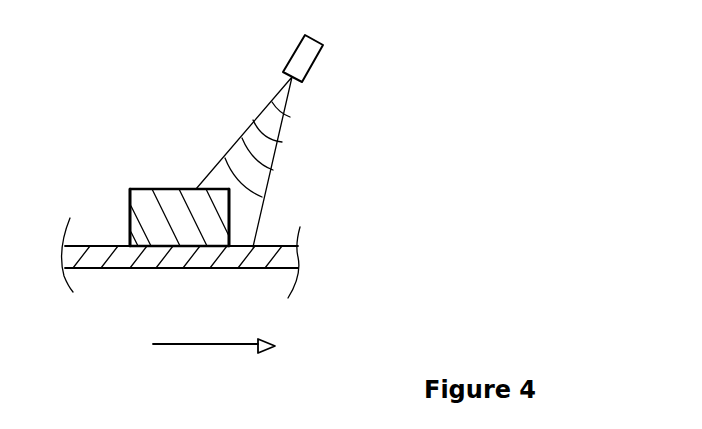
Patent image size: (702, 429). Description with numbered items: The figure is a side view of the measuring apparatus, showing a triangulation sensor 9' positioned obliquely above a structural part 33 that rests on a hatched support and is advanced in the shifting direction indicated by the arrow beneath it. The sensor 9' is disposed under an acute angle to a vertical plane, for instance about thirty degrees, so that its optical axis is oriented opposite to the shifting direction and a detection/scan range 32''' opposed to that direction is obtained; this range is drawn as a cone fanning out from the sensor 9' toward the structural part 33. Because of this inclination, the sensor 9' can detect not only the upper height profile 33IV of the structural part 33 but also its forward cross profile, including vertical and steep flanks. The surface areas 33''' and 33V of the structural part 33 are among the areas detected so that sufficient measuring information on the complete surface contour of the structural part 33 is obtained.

The triangulation sensor 9' is at (329, 64).
The detection/scan range 32''' is at (297, 162).
The structural part 33 is at (178, 224).
The upper height profile 33IV is at (166, 189).
The surface area 33V is at (130, 202).
The surface area 33''' is at (302, 217).